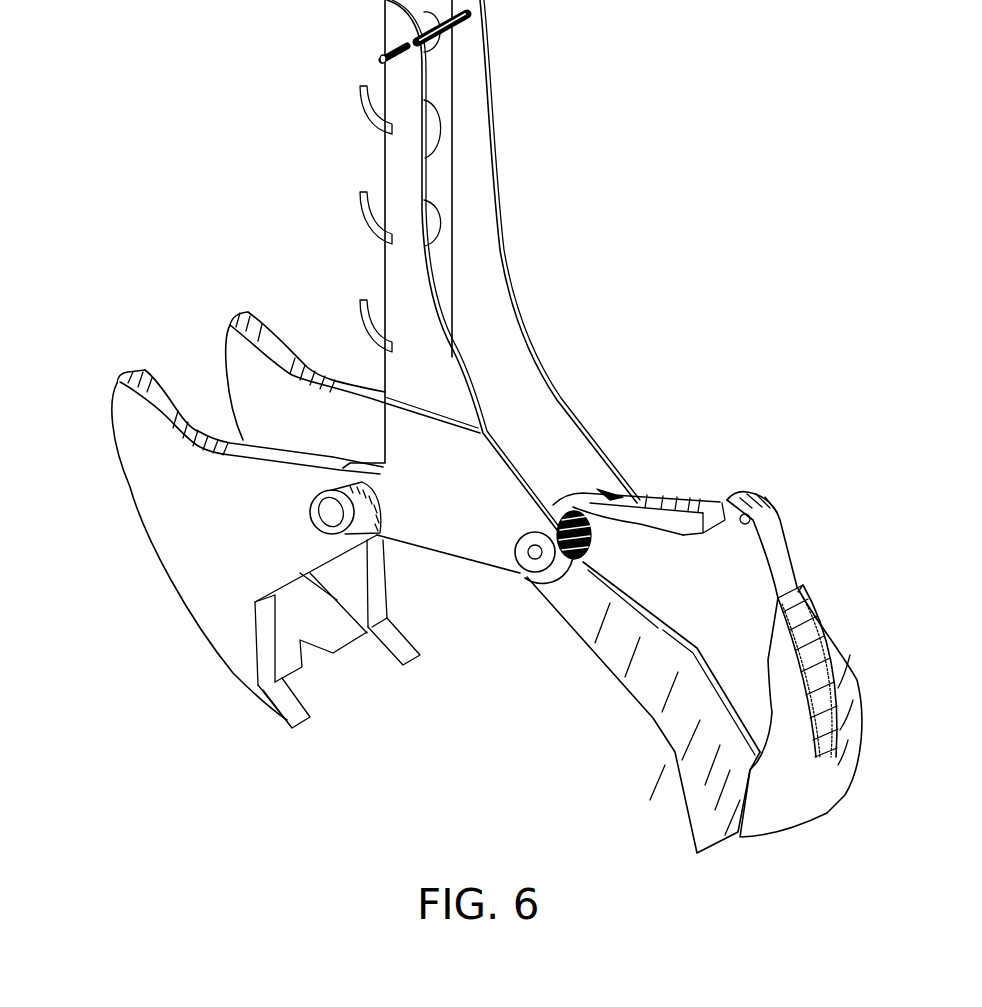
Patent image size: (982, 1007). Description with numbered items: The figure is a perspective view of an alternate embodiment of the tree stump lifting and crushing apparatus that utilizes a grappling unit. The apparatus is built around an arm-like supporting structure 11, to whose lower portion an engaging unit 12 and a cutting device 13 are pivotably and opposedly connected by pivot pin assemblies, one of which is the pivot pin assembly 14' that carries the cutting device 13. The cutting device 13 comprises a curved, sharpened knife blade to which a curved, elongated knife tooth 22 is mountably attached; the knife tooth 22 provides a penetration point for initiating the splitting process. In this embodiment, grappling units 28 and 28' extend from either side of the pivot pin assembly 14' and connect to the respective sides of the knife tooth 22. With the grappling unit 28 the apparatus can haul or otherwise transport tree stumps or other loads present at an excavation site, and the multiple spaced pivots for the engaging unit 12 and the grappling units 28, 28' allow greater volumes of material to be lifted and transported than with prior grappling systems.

The supporting structure 11 is at (571, 199).
The engaging unit 12 is at (112, 562).
The cutting device 13 is at (840, 510).
The pivot pin assembly 14' is at (541, 568).
The knife tooth 22 is at (790, 797).
The grappling unit 28 is at (643, 707).
The grappling unit 28' is at (845, 675).